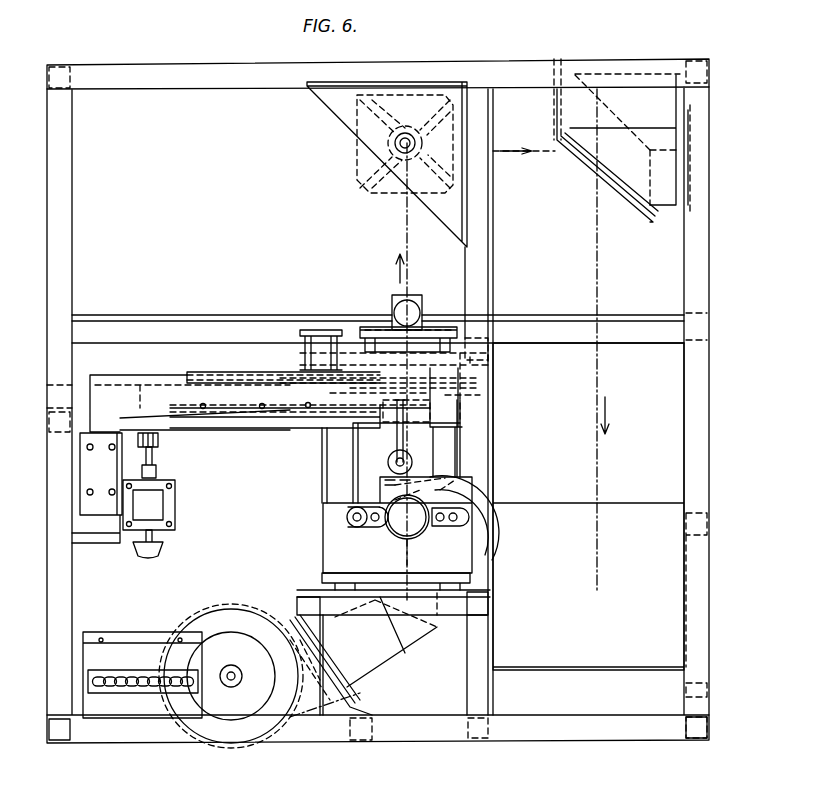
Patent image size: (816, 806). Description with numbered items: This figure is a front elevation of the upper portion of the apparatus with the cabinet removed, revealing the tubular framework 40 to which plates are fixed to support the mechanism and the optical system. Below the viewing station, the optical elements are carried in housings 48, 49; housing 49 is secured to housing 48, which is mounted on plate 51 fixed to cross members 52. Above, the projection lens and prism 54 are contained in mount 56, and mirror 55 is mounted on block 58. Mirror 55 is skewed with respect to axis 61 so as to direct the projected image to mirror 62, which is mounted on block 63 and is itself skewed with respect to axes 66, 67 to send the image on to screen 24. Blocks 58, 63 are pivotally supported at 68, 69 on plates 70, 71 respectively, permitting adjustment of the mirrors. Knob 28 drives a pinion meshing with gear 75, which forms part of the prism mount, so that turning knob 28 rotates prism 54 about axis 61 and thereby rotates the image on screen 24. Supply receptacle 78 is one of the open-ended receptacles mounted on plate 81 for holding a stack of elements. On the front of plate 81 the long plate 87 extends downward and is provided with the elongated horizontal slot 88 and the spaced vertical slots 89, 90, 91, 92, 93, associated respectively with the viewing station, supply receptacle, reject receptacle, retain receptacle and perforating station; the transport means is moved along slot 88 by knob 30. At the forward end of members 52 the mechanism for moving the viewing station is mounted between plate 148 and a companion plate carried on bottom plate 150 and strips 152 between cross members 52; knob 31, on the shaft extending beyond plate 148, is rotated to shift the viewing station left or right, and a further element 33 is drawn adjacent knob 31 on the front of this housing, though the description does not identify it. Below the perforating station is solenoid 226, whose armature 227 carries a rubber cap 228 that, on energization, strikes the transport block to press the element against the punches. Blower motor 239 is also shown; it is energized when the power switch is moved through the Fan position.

The screen 24 is at (588, 379).
The knob 28 is at (395, 305).
The knob 30 is at (390, 462).
The knob 31 is at (410, 535).
The guide roller 33 is at (353, 525).
The tubular framework 40 is at (72, 237).
The housing 48 is at (460, 462).
The housing 49 is at (460, 445).
The plate 51 is at (300, 588).
The cross members 52 is at (300, 598).
The prism 54 is at (418, 297).
The mirror 55 is at (362, 192).
The mount 56 is at (470, 370).
The block 58 is at (350, 158).
The axis 61 is at (400, 240).
The mirror 62 is at (625, 205).
The block 63 is at (635, 74).
The axis 66 is at (515, 145).
The axis 67 is at (597, 265).
The pivot 68 is at (395, 143).
The pivot 69 is at (690, 150).
The plate 70 is at (448, 212).
The plate 71 is at (690, 200).
The gear 75 is at (432, 327).
The supply receptacle 78 is at (313, 330).
The plate 81 is at (150, 375).
The long plate 87 is at (290, 428).
The elongated horizontal slot 88 is at (205, 408).
The vertical slot 89 is at (397, 410).
The vertical slot 90 is at (308, 405).
The vertical slot 91 is at (262, 405).
The vertical slot 92 is at (205, 405).
The vertical slot 93 is at (120, 405).
The plate 148 is at (490, 565).
The bottom plate 150 is at (348, 590).
The strips 152 is at (480, 585).
The solenoid 226 is at (160, 505).
The armature 227 is at (152, 455).
The rubber cap 228 is at (158, 435).
The blower motor 239 is at (220, 605).